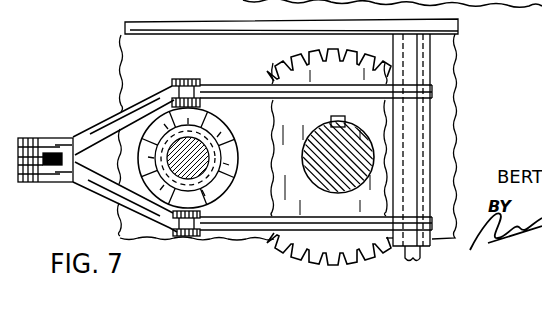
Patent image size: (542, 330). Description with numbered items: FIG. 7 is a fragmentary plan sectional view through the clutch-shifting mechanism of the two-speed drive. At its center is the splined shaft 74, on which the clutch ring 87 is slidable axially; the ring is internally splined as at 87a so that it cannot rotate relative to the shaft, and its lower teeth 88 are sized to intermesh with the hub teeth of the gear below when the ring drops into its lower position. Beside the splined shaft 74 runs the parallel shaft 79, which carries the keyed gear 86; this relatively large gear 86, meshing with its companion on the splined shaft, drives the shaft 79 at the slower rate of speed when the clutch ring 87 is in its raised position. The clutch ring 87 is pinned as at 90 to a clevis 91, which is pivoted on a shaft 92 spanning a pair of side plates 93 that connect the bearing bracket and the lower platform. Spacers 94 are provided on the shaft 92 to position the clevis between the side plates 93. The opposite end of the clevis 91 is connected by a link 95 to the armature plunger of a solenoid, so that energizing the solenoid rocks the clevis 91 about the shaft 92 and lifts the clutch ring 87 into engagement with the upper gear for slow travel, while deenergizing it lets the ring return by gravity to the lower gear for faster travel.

The splined shaft 74 is at (208, 175).
The shaft 79 is at (316, 175).
The gear 86 is at (288, 243).
The clutch ring 87 is at (198, 117).
The internal splines 87a is at (220, 152).
The lower teeth 88 is at (217, 130).
The pin 90 is at (183, 79).
The clevis 91 is at (95, 133).
The shaft 92 is at (431, 134).
The side plates 93 is at (458, 21).
The spacers 94 is at (431, 73).
The link 95 is at (47, 140).